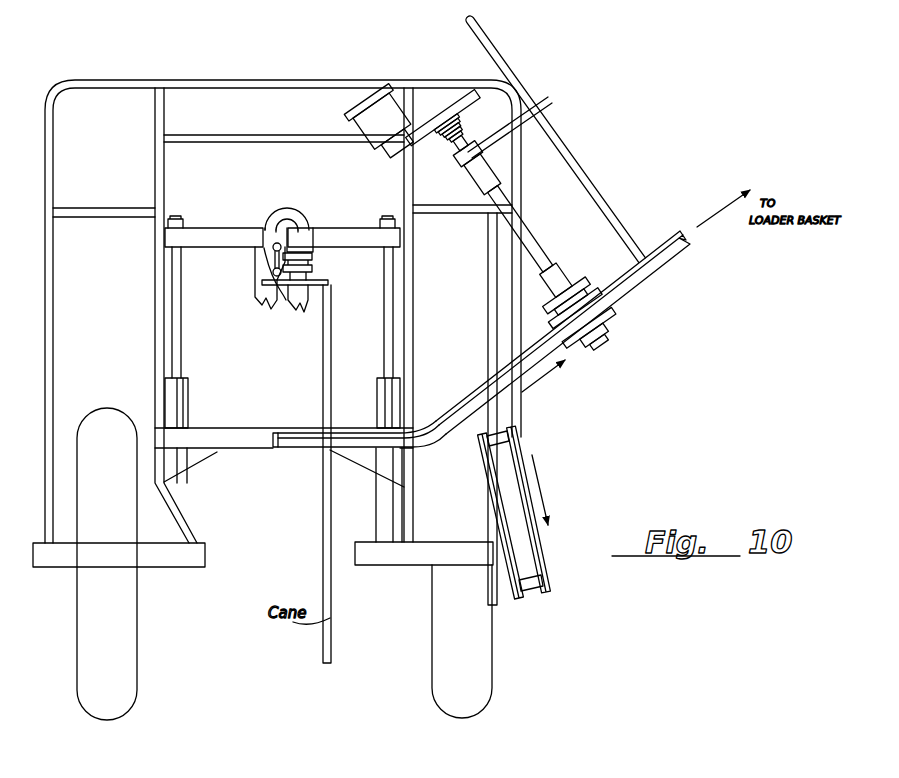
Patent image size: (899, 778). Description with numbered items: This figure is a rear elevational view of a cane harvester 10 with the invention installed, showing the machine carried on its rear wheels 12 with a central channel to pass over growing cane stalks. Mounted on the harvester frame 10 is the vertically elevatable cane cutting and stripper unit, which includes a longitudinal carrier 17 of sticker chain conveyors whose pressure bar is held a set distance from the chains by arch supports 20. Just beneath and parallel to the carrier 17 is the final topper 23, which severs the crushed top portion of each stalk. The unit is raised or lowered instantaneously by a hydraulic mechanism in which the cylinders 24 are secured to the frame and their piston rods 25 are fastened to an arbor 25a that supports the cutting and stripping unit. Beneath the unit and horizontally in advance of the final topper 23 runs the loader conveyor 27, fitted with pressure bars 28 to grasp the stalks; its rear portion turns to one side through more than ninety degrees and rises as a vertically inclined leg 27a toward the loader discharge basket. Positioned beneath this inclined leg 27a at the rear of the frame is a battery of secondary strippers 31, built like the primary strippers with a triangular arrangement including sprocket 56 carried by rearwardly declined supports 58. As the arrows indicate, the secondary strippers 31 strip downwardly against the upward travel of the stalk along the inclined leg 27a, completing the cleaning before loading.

The cane harvester 10 is at (268, 135).
The rear wheels 12 is at (118, 662).
The longitudinal carrier 17 is at (315, 260).
The arch supports 20 is at (288, 212).
The final topper 23 is at (268, 308).
The cylinders 24 is at (175, 395).
The piston rods 25 is at (181, 328).
The arbor 25a is at (262, 238).
The loader conveyor 27 is at (283, 430).
The vertically inclined leg 27a is at (468, 368).
The pressure bars 28 is at (290, 448).
The secondary strippers 31 is at (523, 445).
The sprocket 56 is at (488, 475).
The rearwardly declined supports 58 is at (533, 595).